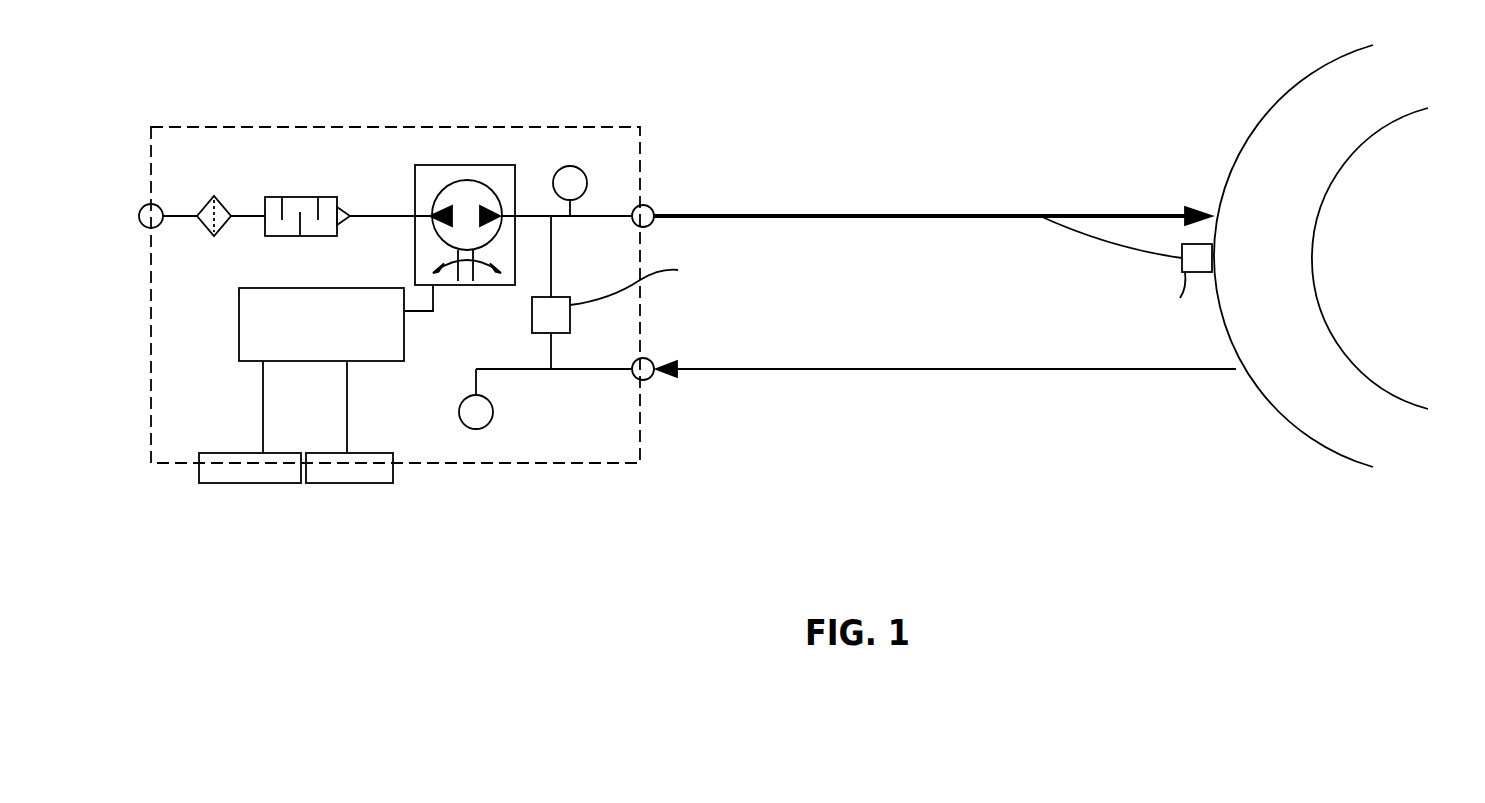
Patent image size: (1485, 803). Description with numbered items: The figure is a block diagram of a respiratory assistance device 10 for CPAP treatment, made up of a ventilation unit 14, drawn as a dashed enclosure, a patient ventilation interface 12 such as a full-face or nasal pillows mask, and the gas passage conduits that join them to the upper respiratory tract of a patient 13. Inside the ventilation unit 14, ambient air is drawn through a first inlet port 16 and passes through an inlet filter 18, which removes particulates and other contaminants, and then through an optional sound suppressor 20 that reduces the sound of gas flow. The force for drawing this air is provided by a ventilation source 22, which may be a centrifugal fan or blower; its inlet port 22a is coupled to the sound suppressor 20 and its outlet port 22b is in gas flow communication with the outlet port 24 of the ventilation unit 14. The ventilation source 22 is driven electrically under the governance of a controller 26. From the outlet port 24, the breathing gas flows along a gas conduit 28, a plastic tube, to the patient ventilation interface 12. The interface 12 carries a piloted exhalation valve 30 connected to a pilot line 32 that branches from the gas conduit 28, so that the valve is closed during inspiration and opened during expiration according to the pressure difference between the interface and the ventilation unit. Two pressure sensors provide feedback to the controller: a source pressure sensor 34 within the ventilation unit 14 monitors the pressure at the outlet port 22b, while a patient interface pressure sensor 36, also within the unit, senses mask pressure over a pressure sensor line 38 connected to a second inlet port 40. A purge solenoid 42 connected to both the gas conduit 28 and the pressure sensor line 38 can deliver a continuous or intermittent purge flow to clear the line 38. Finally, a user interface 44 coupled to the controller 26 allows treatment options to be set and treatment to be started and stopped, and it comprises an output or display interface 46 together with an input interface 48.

The respiratory assistance device 10 is at (824, 496).
The patient ventilation interface 12 is at (1293, 256).
The patient 13 is at (1373, 258).
The ventilation unit 14 is at (408, 464).
The first inlet port 16 is at (145, 228).
The inlet filter 18 is at (214, 236).
The sound suppressor 20 is at (292, 236).
The ventilation source 22 is at (437, 197).
The inlet port 22a is at (435, 217).
The outlet port 22b is at (499, 216).
The outlet port 24 is at (652, 207).
The controller 26 is at (239, 321).
The gas conduit 28 is at (876, 212).
The piloted exhalation valve 30 is at (1198, 258).
The pilot line 32 is at (1114, 246).
The source pressure sensor 34 is at (587, 183).
The patient interface pressure sensor 36 is at (493, 414).
The pressure sensor line 38 is at (848, 368).
The second inlet port 40 is at (652, 360).
The purge solenoid 42 is at (570, 316).
The user interface 44 is at (302, 522).
The output or display interface 46 is at (257, 483).
The input interface 48 is at (347, 483).